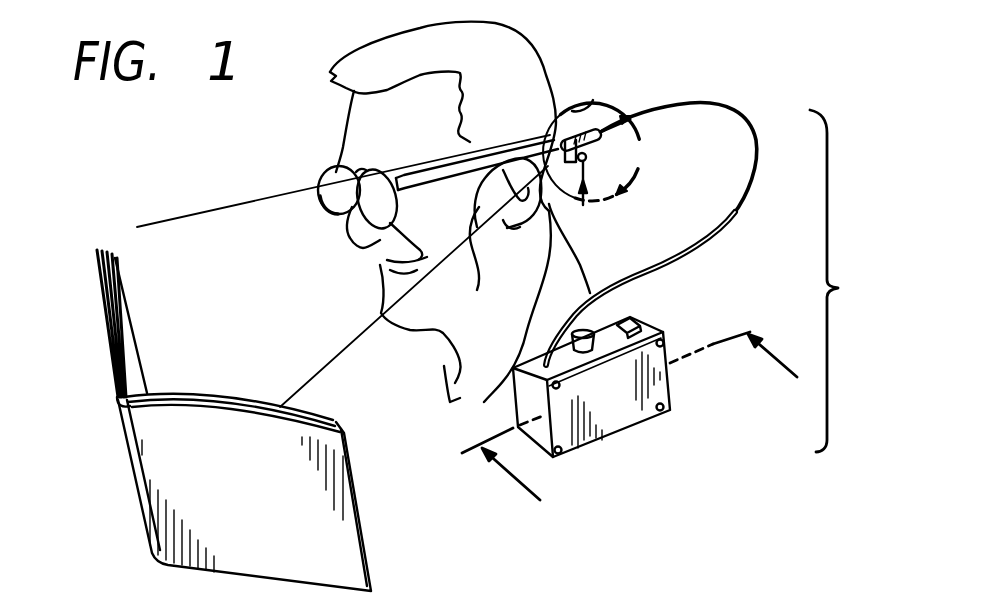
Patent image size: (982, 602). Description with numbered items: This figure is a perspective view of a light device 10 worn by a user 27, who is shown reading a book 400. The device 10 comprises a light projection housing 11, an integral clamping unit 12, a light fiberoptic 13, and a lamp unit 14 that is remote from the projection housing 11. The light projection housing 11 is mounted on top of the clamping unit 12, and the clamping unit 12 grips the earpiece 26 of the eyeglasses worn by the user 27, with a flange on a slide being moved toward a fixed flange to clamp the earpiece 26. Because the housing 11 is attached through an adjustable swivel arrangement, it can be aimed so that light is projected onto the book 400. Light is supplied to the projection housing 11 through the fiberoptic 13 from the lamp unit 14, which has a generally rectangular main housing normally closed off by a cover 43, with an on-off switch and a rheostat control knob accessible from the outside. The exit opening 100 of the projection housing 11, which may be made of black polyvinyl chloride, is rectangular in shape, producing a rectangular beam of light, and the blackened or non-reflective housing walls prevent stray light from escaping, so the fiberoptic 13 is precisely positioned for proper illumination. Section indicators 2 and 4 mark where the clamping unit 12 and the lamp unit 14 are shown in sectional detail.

The device 10 is at (845, 281).
The exit opening 100 is at (560, 130).
The light projection housing 11 is at (594, 98).
The clamping unit 12 is at (586, 208).
The light fiberoptic 13 is at (763, 136).
The lamp unit 14 is at (625, 396).
The cover 43 is at (622, 402).
The earpiece 26 is at (472, 265).
The user 27 is at (345, 120).
The section line 2- 2 is at (605, 152).
The section line 4- 4 is at (625, 409).
The book 400 is at (370, 535).